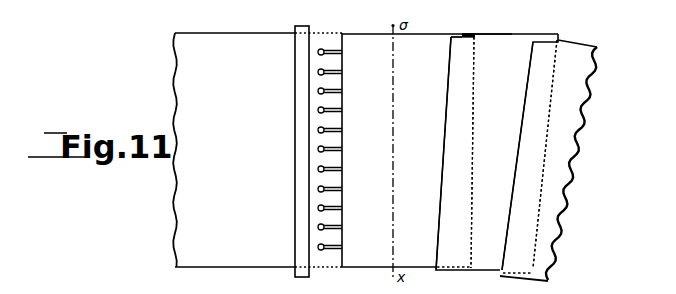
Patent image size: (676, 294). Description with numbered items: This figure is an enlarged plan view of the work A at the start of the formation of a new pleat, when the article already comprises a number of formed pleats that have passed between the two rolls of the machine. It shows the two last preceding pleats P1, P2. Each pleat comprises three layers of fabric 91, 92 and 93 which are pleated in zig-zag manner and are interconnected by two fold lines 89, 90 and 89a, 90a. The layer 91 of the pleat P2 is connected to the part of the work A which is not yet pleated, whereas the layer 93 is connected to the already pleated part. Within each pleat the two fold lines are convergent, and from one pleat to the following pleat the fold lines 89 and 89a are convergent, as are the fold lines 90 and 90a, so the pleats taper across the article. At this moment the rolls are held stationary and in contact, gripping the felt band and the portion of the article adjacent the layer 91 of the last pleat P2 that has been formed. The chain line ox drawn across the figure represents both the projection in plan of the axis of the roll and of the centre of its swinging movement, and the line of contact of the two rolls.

The work A is at (250, 122).
The pleat P1 is at (530, 164).
The pleat P2 is at (450, 165).
The fold line 89 is at (547, 146).
The fold line 89a is at (475, 126).
The fold line 90 is at (521, 142).
The fold line 90a is at (445, 120).
The layer of fabric 91 is at (457, 33).
The layer of fabric 92 is at (460, 34).
The layer of fabric 93 is at (510, 35).